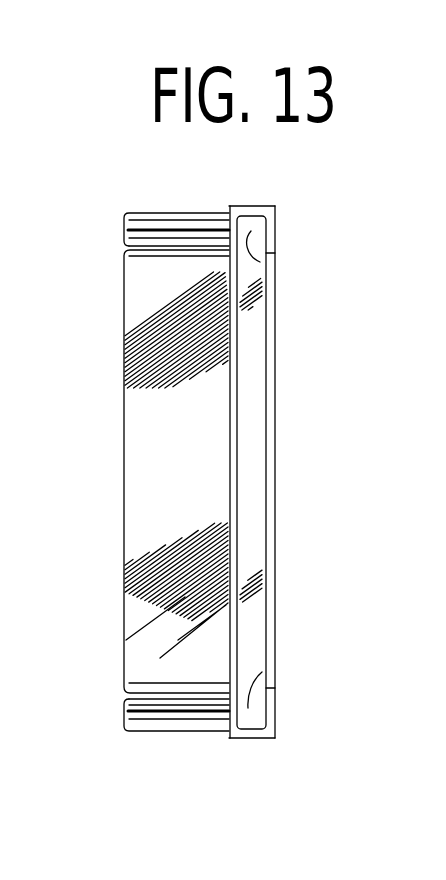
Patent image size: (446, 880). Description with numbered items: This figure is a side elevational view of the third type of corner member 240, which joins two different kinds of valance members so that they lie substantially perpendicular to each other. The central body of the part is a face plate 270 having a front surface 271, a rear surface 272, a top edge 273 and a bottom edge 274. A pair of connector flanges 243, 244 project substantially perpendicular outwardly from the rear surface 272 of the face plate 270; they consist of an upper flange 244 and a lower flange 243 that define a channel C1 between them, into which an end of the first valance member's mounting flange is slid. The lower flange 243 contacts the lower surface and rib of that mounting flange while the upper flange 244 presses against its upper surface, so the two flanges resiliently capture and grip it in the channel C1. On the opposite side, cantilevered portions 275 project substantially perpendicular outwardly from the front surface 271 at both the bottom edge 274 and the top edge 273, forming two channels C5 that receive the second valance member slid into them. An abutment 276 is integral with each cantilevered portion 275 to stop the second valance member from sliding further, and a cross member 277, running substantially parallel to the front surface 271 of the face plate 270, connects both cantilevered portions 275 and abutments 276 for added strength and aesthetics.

The corner member 240 is at (315, 194).
The lower flange 243 is at (138, 257).
The upper flange 244 is at (128, 228).
The face plate 270 is at (152, 414).
The front surface 271 is at (239, 459).
The rear surface 272 is at (228, 508).
The top edge 273 is at (244, 206).
The bottom edge 274 is at (249, 739).
The cantilevered portions 275 is at (270, 232).
The abutment 276 is at (253, 360).
The cross member 277 is at (270, 546).
The channel C1 is at (122, 245).
The channels C5 is at (260, 262).